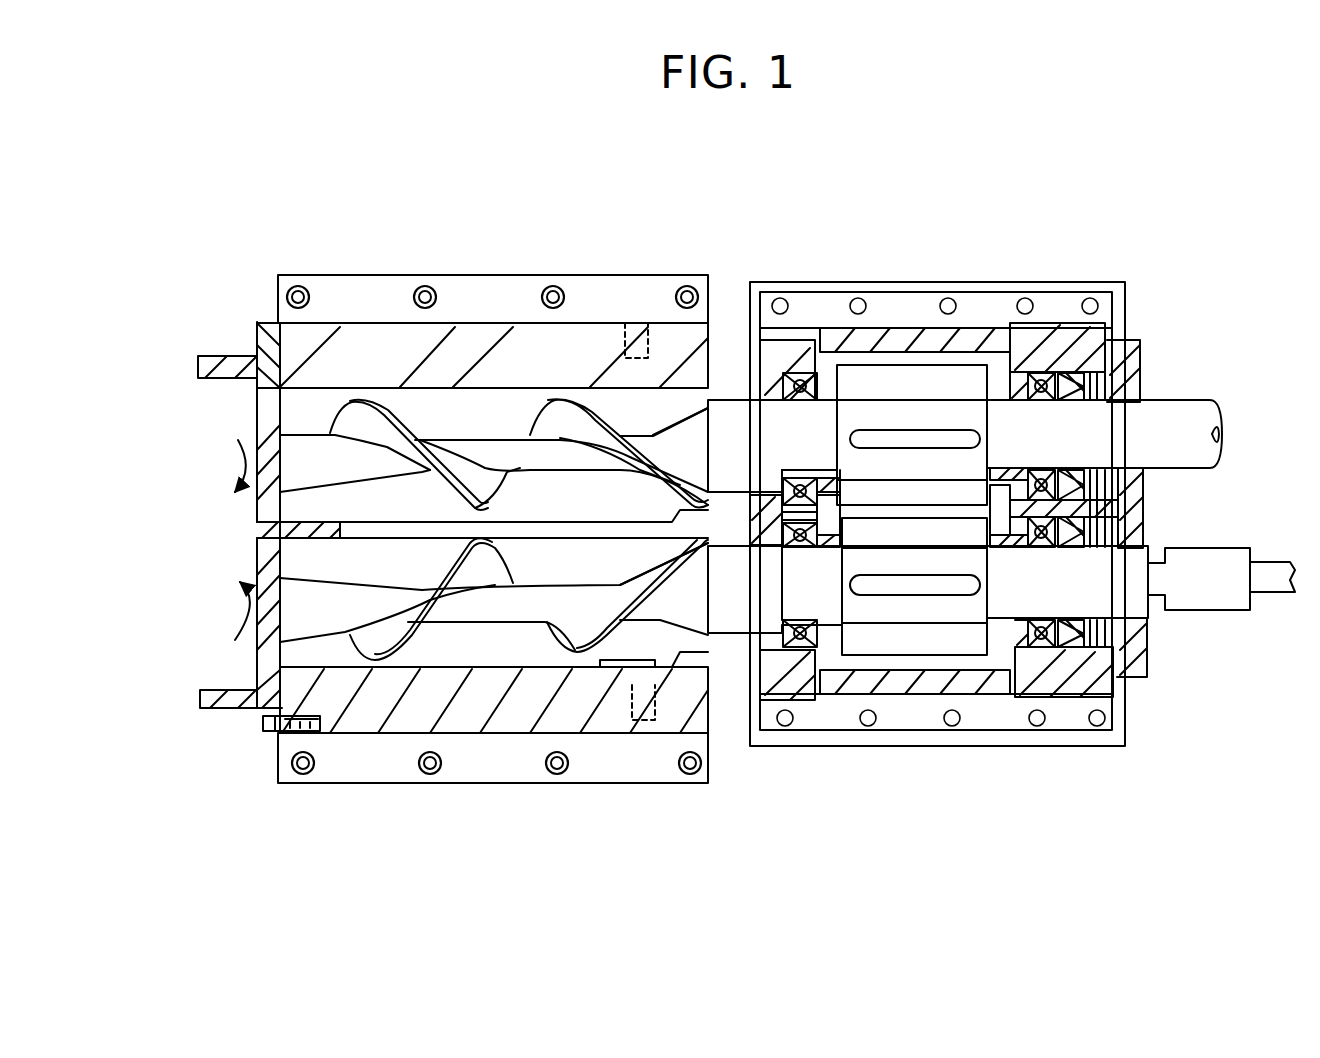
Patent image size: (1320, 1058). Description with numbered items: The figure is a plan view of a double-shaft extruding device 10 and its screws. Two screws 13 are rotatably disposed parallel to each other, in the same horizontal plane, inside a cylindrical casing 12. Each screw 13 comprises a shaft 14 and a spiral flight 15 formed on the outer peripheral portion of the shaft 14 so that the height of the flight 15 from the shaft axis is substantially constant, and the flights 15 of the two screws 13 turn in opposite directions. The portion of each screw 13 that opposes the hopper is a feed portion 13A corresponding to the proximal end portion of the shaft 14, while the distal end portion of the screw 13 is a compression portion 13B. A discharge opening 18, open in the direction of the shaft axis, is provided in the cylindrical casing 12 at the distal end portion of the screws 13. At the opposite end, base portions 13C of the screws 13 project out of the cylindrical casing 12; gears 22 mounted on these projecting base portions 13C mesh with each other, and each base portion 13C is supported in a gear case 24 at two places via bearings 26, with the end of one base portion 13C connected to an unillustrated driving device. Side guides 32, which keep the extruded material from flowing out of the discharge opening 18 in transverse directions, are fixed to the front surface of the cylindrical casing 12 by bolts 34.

The double-shaft extruding device 10 is at (525, 198).
The cylindrical casing 12 is at (493, 310).
The screw 13 is at (367, 188).
The shaft 14 is at (361, 446).
The spiral flight 15 is at (443, 420).
The feed portion 13A is at (501, 442).
The compression portion 13B is at (312, 480).
The base portion 13C is at (1125, 425).
The discharge opening 18 is at (272, 395).
The gears 22 is at (893, 373).
The gear case 24 is at (1012, 322).
The bearings 26 is at (806, 352).
The side guides 32 is at (215, 353).
The bolts 34 is at (257, 740).